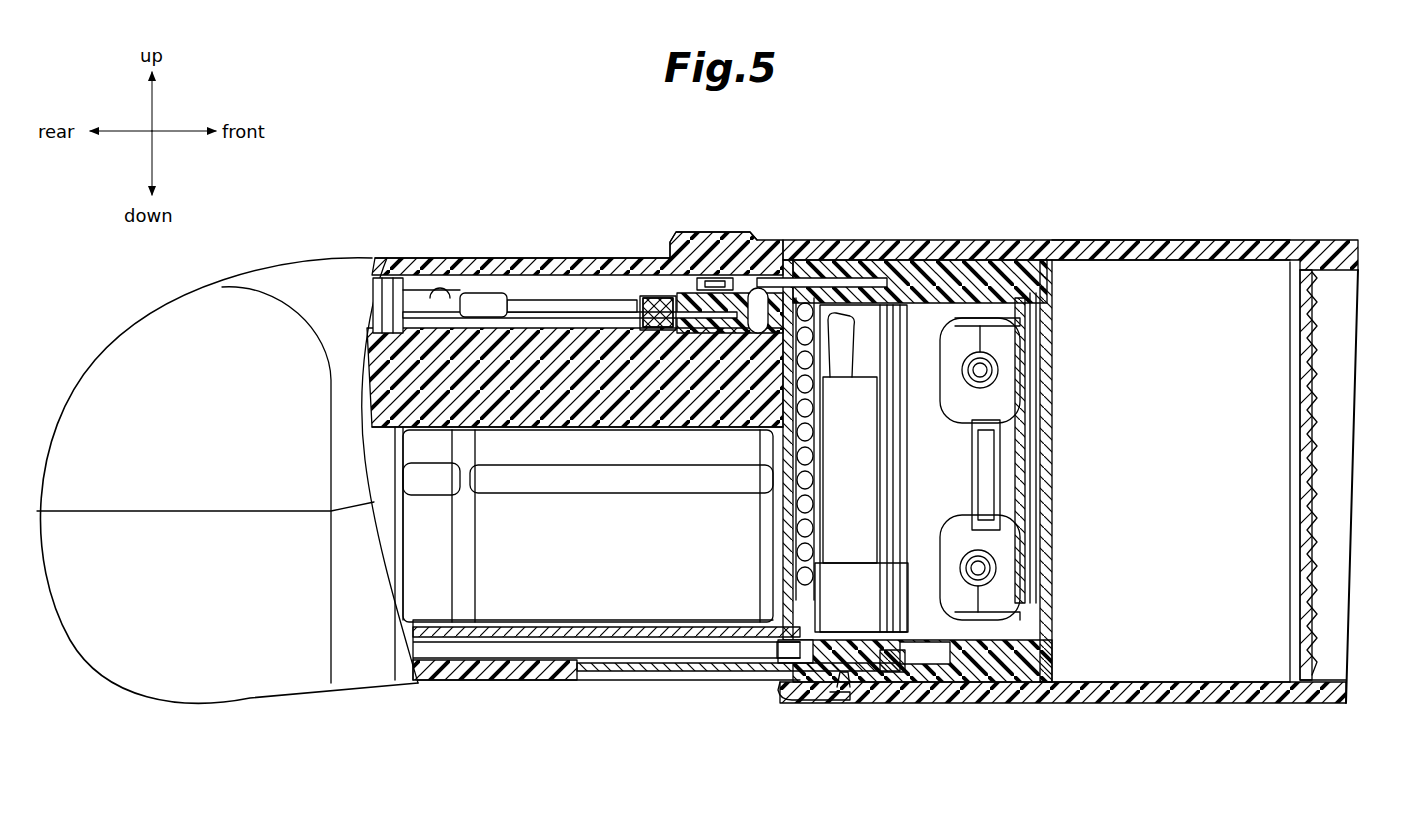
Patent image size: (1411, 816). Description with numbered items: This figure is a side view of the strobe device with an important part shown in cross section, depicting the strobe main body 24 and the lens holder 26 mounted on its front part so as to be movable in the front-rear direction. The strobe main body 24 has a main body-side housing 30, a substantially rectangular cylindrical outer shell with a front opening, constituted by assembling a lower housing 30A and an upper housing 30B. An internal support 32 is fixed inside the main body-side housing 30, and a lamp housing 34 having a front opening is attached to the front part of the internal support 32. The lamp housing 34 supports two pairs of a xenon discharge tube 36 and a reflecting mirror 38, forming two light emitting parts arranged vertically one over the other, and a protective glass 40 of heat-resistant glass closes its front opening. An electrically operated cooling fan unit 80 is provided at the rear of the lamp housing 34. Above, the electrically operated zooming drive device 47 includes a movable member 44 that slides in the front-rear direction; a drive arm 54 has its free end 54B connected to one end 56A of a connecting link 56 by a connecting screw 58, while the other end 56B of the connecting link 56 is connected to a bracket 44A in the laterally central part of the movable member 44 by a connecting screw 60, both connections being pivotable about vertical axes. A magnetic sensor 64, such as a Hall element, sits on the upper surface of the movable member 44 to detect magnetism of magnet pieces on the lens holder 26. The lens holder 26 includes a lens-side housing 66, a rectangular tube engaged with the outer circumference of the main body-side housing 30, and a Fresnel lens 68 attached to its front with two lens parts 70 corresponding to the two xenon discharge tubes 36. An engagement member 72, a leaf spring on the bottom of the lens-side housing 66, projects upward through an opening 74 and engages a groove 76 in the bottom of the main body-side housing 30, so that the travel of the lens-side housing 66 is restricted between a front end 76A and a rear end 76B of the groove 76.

The strobe main body 24 is at (606, 248).
The lens holder 26 is at (1157, 235).
The main body-side housing 30 is at (555, 260).
The lower housing 30A is at (495, 664).
The upper housing 30B is at (438, 257).
The internal support 32 is at (412, 300).
The lamp housing 34 is at (955, 240).
The xenon discharge tube 36 is at (1003, 388).
The reflecting mirror 38 is at (1000, 336).
The protective glass 40 is at (1023, 453).
The movable member 44 is at (718, 278).
The bracket 44A is at (635, 303).
The electrically operated zooming drive device 47 is at (573, 293).
The drive arm 54 is at (378, 262).
The free end of drive arm 54B is at (478, 293).
The connecting link 56 is at (573, 330).
The one end of connecting link 56A is at (487, 330).
The other end of connecting link 56B is at (644, 330).
The connecting screw 58 is at (508, 304).
The connecting screw 60 is at (699, 232).
The magnetic sensor 64 is at (753, 288).
The lens-side housing 66 is at (1060, 238).
The Fresnel lens 68 is at (1323, 415).
The lens part 70 is at (1312, 327).
The engagement member 72 is at (838, 688).
The opening 74 is at (840, 690).
The groove 76 is at (681, 664).
The front end of groove 76A is at (884, 678).
The rear end of groove 76B is at (584, 670).
The cooling fan unit 80 is at (845, 396).